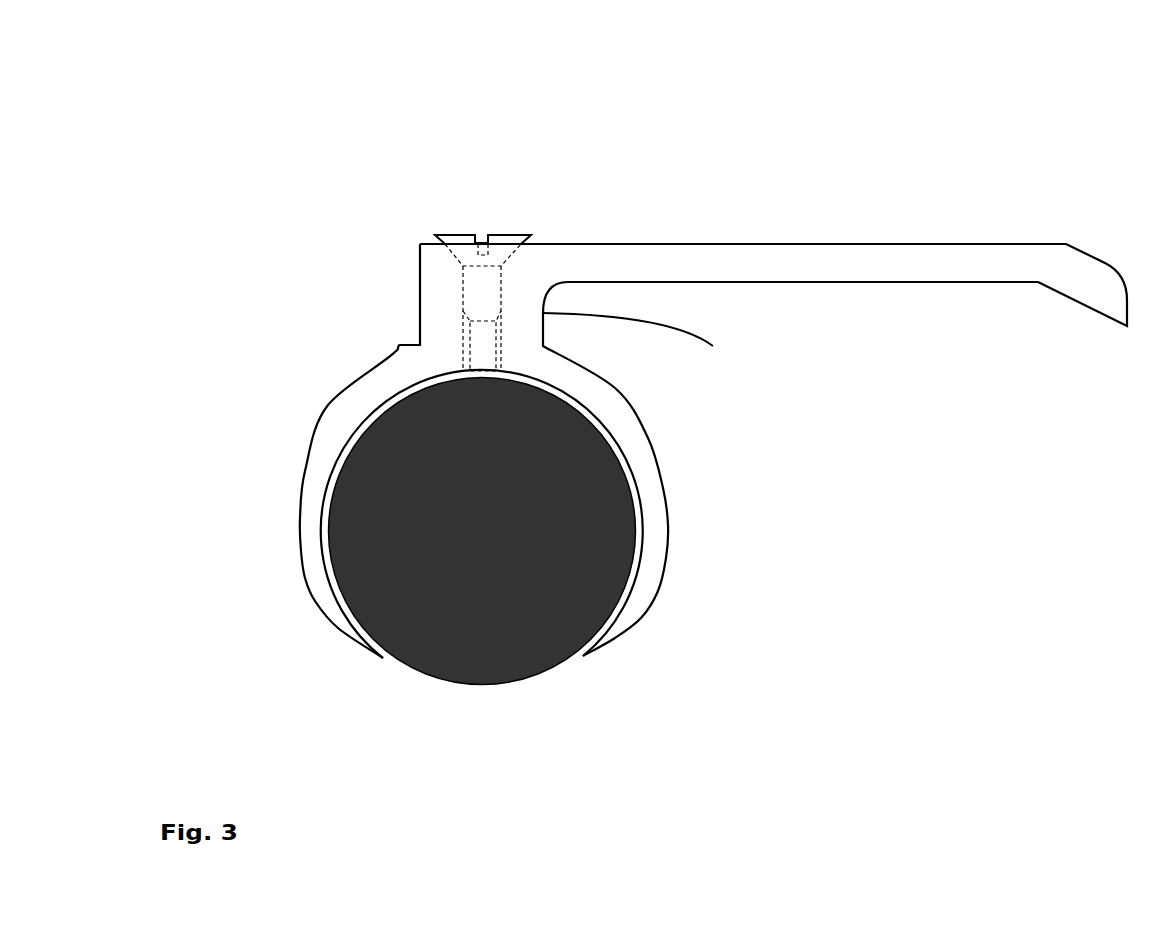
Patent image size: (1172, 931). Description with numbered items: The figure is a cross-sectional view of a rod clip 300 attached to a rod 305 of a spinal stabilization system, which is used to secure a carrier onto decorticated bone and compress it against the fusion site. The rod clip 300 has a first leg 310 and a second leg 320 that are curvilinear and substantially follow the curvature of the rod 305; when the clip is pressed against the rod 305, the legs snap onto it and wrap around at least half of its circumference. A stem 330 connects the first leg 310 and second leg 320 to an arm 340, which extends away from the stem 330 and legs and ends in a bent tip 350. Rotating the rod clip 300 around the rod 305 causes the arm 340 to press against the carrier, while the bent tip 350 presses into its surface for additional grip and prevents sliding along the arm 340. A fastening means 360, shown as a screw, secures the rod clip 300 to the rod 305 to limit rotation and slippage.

The rod clip 300 is at (380, 151).
The rod 305 is at (478, 677).
The first leg 310 is at (657, 552).
The second leg 320 is at (290, 495).
The stem 330 is at (645, 350).
The arm 340 is at (813, 236).
The bent tip 350 is at (1090, 252).
The fastening means 360 is at (497, 228).